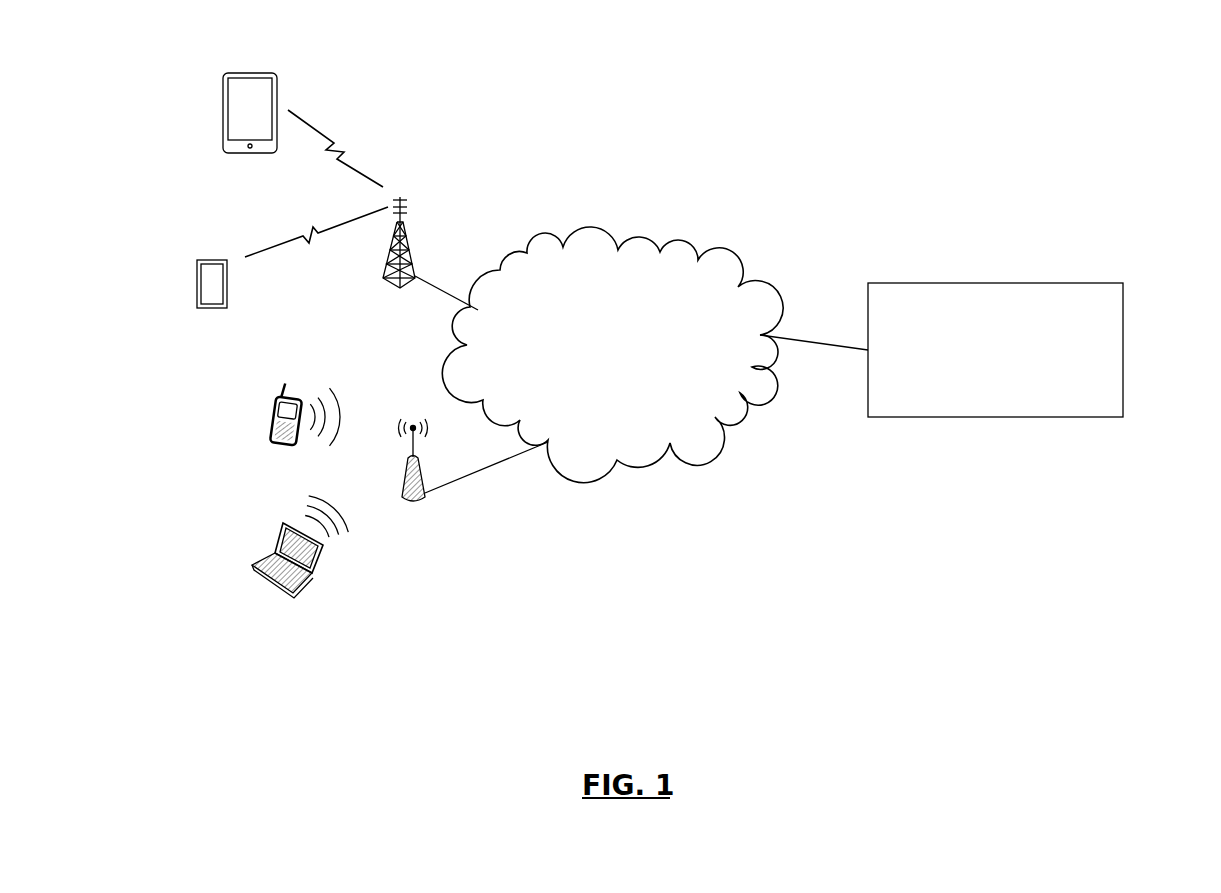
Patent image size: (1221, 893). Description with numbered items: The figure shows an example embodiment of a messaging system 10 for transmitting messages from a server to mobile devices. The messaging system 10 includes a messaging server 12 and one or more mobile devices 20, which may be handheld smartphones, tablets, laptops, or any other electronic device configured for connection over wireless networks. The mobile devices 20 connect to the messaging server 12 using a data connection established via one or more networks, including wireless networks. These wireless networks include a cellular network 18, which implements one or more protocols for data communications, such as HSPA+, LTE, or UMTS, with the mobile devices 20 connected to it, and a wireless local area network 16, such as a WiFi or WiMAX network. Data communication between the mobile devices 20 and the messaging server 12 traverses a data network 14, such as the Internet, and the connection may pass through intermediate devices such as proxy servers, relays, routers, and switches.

The messaging system 10 is at (814, 149).
The messaging server 12 is at (1125, 348).
The data network 14 is at (628, 369).
The wireless local area network 16 is at (453, 530).
The cellular network 18 is at (446, 212).
The mobile devices 20 is at (225, 97).